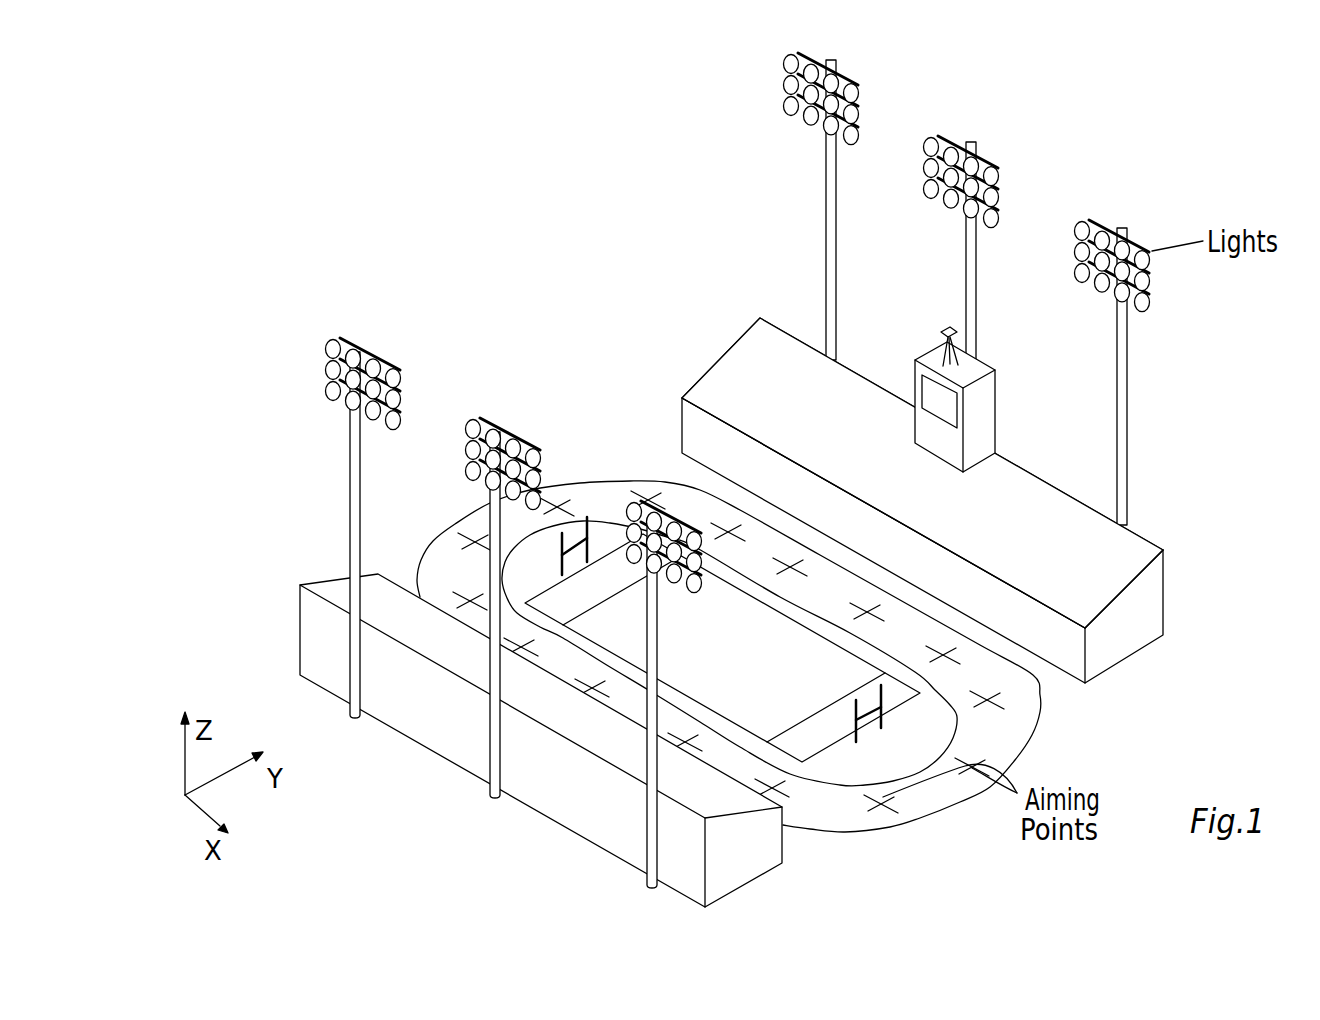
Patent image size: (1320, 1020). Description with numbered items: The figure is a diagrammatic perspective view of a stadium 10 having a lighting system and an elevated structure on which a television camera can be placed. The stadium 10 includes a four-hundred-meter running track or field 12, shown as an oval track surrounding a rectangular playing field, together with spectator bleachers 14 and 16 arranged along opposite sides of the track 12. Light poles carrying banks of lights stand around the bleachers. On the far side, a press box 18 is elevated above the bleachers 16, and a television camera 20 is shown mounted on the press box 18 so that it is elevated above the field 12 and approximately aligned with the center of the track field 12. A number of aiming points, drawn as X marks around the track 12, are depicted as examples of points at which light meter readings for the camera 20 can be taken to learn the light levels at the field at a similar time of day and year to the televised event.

The stadium 10 is at (553, 330).
The running track 12 is at (1018, 735).
The spectator bleachers 14 is at (773, 853).
The spectator bleachers 16 is at (1123, 663).
The press box 18 is at (990, 398).
The television camera 20 is at (948, 334).